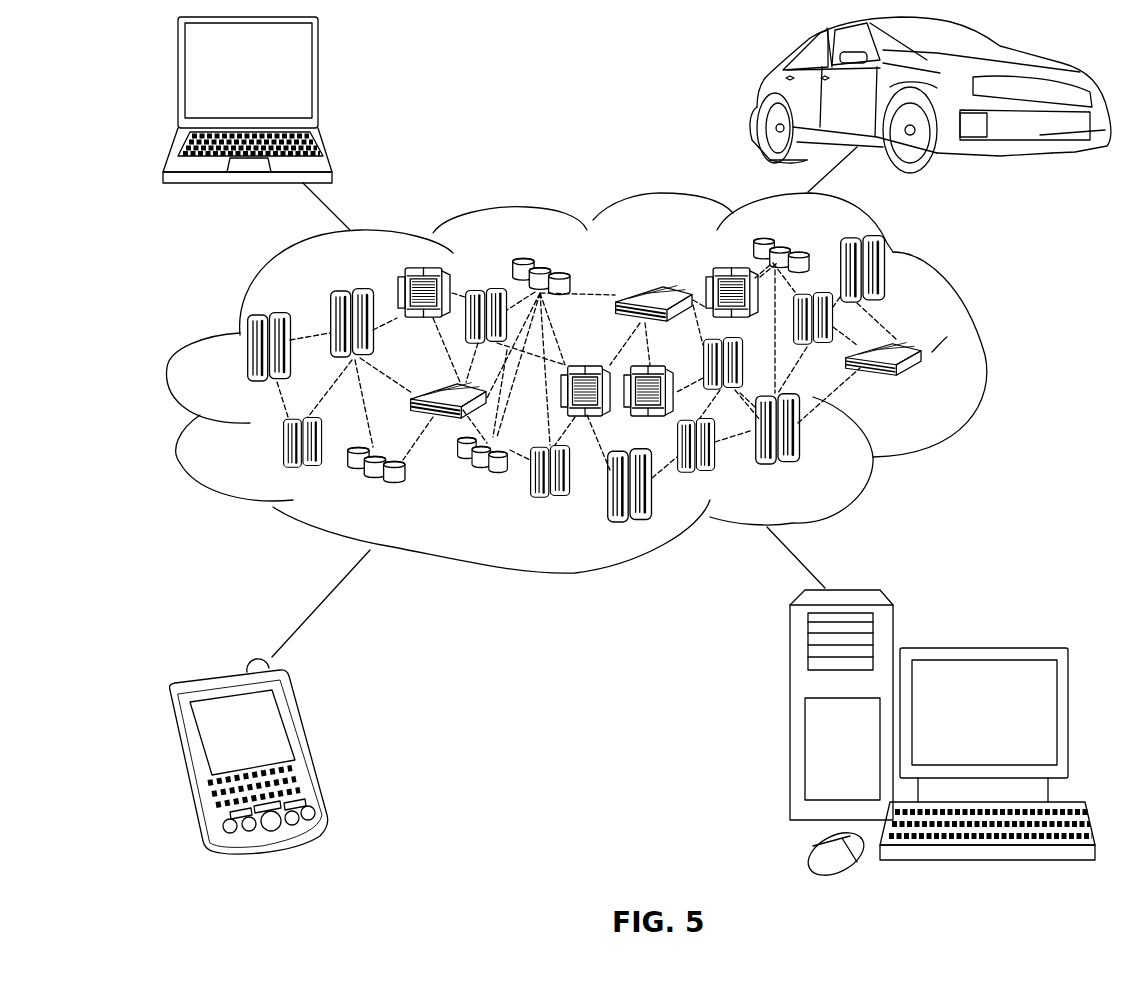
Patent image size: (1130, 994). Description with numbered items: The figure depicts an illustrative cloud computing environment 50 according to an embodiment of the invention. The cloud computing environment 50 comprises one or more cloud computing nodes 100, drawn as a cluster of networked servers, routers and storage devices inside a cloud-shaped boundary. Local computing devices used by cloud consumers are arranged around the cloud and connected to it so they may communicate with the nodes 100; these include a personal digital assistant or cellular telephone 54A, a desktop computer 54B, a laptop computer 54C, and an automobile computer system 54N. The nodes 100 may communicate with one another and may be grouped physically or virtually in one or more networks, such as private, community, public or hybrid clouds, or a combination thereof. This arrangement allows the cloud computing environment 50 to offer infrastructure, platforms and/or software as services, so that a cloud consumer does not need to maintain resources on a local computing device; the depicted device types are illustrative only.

The cloud computing environment 50 is at (983, 360).
The cloud computing nodes 100 is at (925, 387).
The personal digital assistant or cellular telephone 54A is at (300, 745).
The desktop computer 54B is at (980, 647).
The laptop computer 54C is at (318, 78).
The automobile computer system 54N is at (758, 100).